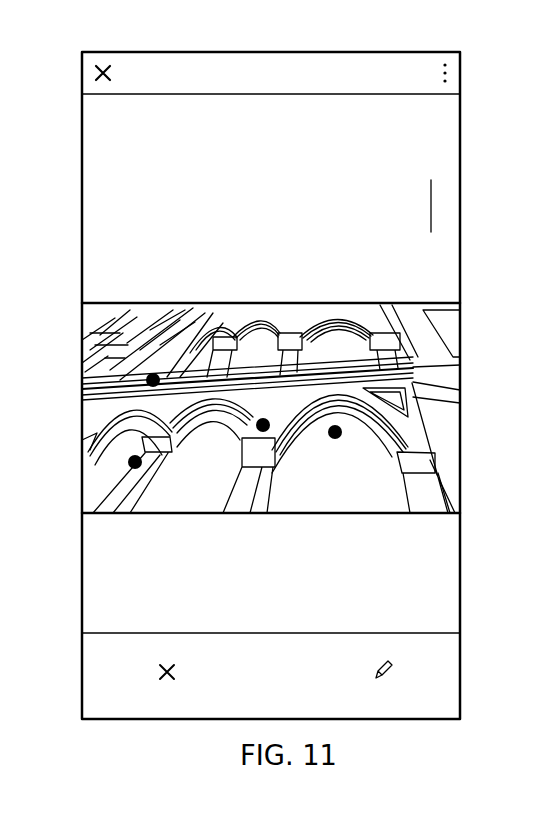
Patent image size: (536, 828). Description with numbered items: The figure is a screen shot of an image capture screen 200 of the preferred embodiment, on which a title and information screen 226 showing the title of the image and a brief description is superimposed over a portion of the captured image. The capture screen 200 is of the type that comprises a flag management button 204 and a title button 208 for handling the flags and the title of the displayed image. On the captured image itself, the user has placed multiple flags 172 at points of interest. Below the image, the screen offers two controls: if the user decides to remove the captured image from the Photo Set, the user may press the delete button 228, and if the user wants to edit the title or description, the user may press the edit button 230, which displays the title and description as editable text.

The image capture screen 200 is at (393, 52).
The flag management button 204 is at (456, 430).
The title button 208 is at (270, 303).
The information screen 226 is at (90, 152).
The flags 172 is at (146, 380).
The delete button 228 is at (164, 730).
The edit button 230 is at (380, 706).